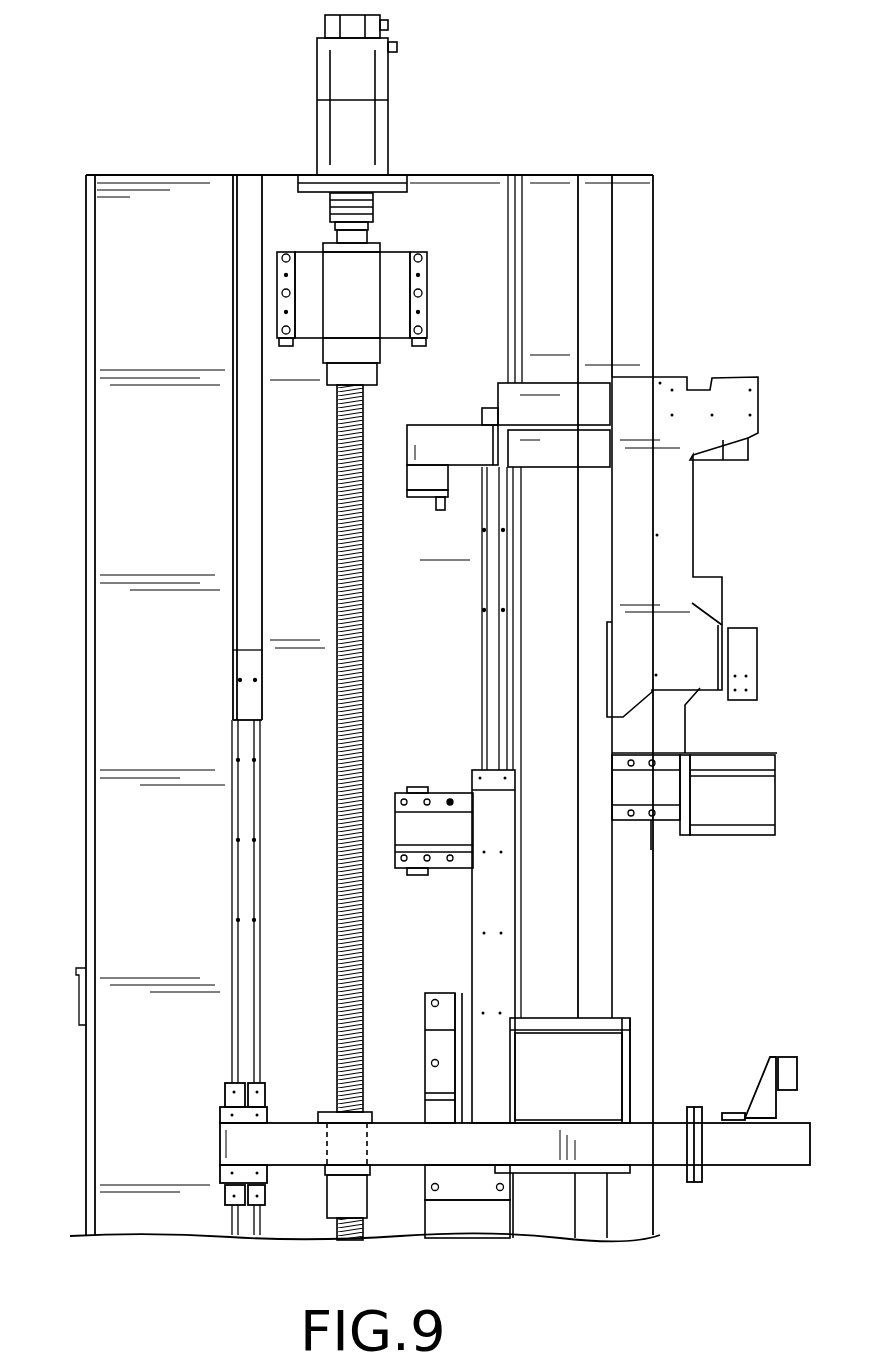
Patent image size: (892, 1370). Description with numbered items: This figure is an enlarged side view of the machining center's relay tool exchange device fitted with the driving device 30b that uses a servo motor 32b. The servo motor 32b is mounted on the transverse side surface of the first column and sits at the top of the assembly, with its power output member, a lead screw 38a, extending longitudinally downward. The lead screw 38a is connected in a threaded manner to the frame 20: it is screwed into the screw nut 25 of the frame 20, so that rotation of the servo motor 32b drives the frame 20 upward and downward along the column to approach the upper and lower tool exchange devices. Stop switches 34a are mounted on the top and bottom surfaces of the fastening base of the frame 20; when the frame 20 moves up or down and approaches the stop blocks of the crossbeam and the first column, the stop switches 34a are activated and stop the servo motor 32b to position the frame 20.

The frame 20 is at (212, 1132).
The screw nut 25 is at (328, 1112).
The driving device 30b is at (445, 215).
The servo motor 32b is at (400, 75).
The stop switches 34a is at (419, 790).
The lead screw 38a is at (355, 552).